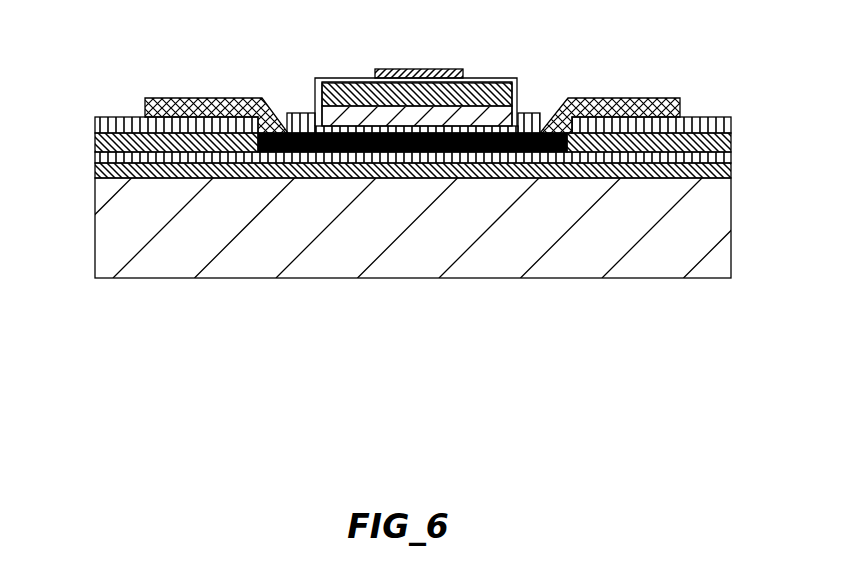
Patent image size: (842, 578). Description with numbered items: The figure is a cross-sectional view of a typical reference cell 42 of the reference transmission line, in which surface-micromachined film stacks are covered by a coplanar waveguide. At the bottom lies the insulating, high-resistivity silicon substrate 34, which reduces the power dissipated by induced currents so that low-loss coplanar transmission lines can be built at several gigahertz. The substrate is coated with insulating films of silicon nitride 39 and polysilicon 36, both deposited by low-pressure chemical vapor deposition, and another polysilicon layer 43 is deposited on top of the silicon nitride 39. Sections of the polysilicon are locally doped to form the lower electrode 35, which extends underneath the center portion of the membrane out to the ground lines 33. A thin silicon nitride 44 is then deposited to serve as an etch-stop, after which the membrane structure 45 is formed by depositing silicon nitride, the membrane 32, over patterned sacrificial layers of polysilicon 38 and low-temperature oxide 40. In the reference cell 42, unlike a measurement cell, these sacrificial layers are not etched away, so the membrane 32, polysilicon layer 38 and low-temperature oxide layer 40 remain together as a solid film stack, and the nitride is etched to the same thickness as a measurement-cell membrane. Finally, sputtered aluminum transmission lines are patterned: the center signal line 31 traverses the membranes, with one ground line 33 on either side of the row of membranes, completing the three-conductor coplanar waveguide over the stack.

The center signal line 31 is at (413, 69).
The membrane 32 is at (483, 78).
The ground line 33 is at (218, 98).
The silicon substrate 34 is at (500, 257).
The lower electrode 35 is at (545, 153).
The polysilicon 36 is at (95, 175).
The polysilicon layer 38 is at (372, 108).
The silicon nitride 39 is at (720, 159).
The low-temperature oxide layer 40 is at (332, 78).
The reference cell 42 is at (192, 373).
The polysilicon layer 43 is at (95, 146).
The thin silicon nitride 44 is at (137, 117).
The membrane structure 45 is at (527, 113).